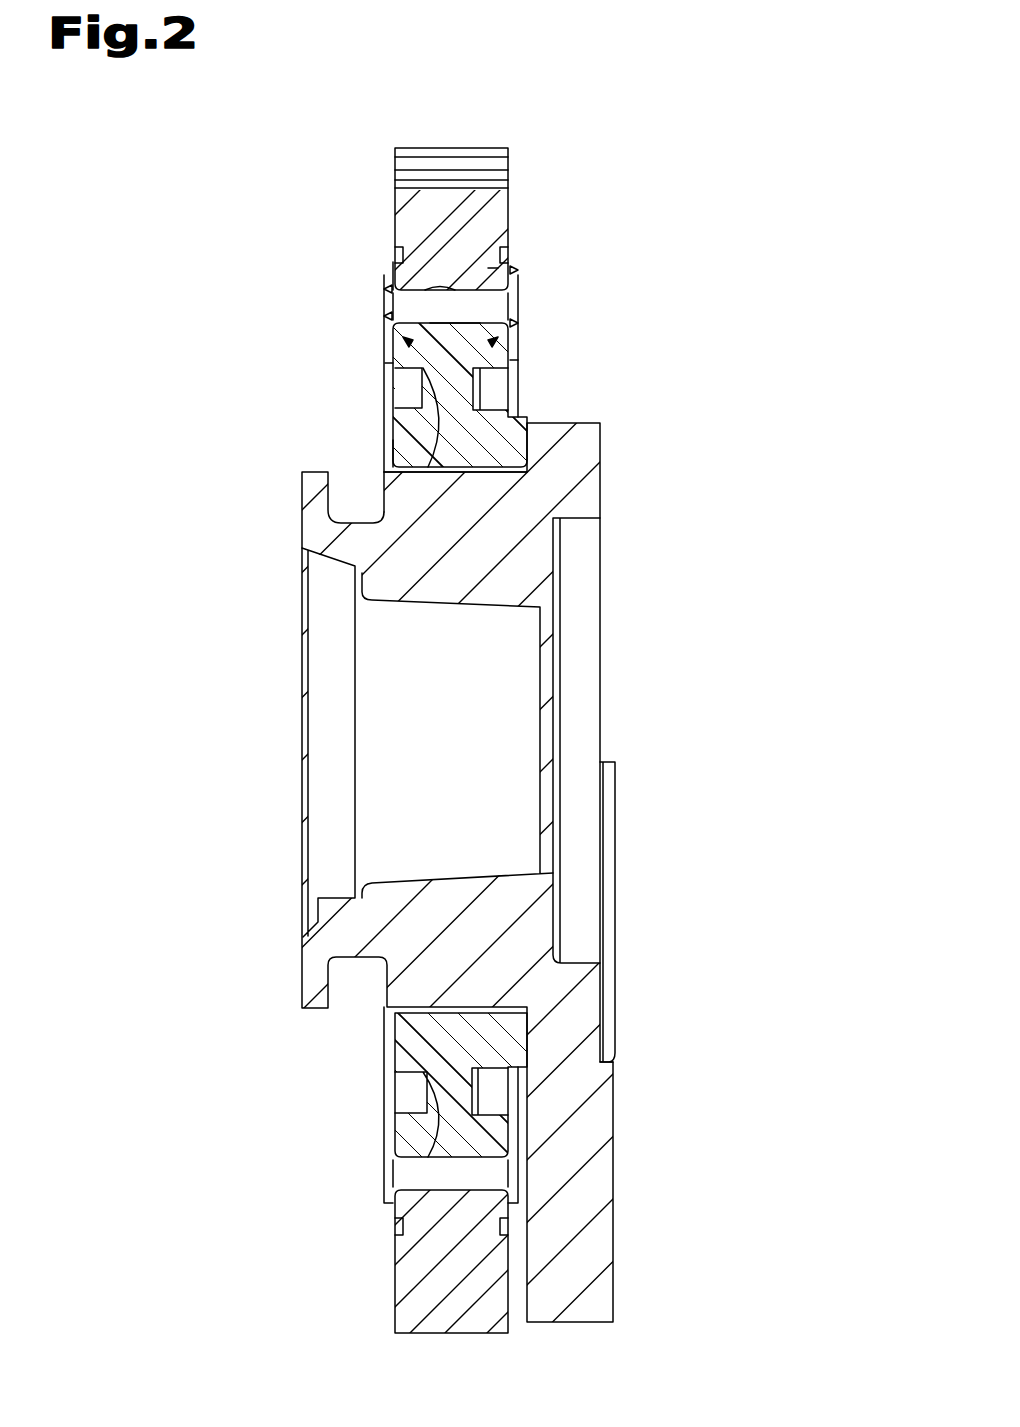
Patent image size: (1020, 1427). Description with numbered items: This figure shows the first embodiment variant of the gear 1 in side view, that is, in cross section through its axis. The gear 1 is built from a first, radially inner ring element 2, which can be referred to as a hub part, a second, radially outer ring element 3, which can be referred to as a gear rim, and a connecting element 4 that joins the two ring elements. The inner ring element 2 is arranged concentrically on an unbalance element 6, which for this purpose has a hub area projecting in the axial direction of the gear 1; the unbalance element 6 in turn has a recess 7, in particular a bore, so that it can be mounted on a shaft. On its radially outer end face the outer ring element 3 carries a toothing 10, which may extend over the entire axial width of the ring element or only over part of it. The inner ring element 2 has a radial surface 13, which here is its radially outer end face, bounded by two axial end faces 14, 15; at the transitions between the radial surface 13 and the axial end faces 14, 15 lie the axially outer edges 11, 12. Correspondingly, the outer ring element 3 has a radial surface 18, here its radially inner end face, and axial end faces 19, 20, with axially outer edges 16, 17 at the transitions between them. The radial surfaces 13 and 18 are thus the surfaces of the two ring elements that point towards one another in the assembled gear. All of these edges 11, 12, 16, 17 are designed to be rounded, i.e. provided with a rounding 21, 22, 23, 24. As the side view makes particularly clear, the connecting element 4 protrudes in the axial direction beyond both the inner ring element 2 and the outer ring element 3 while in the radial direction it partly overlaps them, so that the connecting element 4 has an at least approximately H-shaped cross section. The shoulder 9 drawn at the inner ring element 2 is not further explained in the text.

The gear 1 is at (708, 123).
The first, radially inner ring element 2 is at (387, 413).
The second, radially outer ring element 3 is at (515, 158).
The connecting element 4 is at (380, 302).
The unbalance element 6 is at (628, 1178).
The recess 7 is at (612, 648).
The inner ring shoulder 9 is at (405, 464).
The toothing 10 is at (410, 138).
The axially outer edge 11 is at (382, 318).
The axially outer edge 12 is at (520, 323).
The radial surface 13 is at (453, 325).
The axial end face 14 is at (388, 363).
The axial end face 15 is at (515, 360).
The axially outer edge 16 is at (378, 287).
The axially outer edge 17 is at (515, 270).
The radial surface 18 is at (434, 288).
The axial end face 19 is at (388, 265).
The axial end face 20 is at (512, 260).
The rounding 21 is at (405, 465).
The rounding 22 is at (455, 330).
The rounding 23 is at (380, 277).
The rounding 24 is at (489, 265).